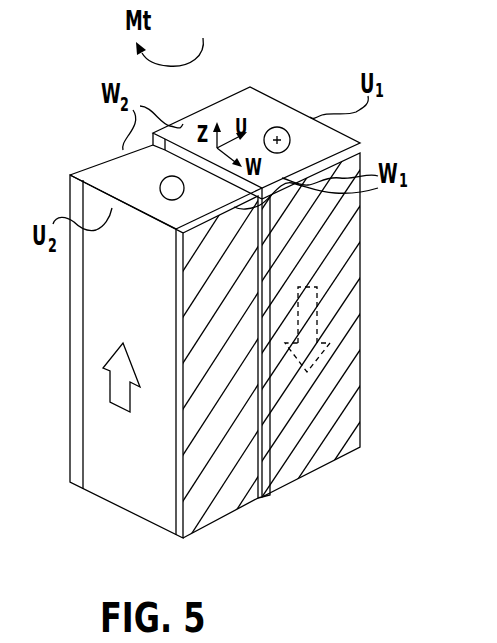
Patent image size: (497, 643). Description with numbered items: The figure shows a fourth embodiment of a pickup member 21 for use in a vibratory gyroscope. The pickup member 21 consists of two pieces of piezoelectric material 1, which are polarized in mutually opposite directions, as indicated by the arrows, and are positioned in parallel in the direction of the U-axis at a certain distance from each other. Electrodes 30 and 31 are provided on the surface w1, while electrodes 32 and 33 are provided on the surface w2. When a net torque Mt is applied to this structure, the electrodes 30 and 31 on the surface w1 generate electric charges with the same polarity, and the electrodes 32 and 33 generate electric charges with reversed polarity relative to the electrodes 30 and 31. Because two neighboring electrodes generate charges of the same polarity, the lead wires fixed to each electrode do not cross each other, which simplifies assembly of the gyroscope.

The piezoelectric material 1 is at (112, 180).
The pickup member 21 is at (262, 95).
The electrode 30 is at (316, 356).
The electrode 31 is at (212, 508).
The electrode 32 is at (262, 93).
The electrode 33 is at (80, 171).